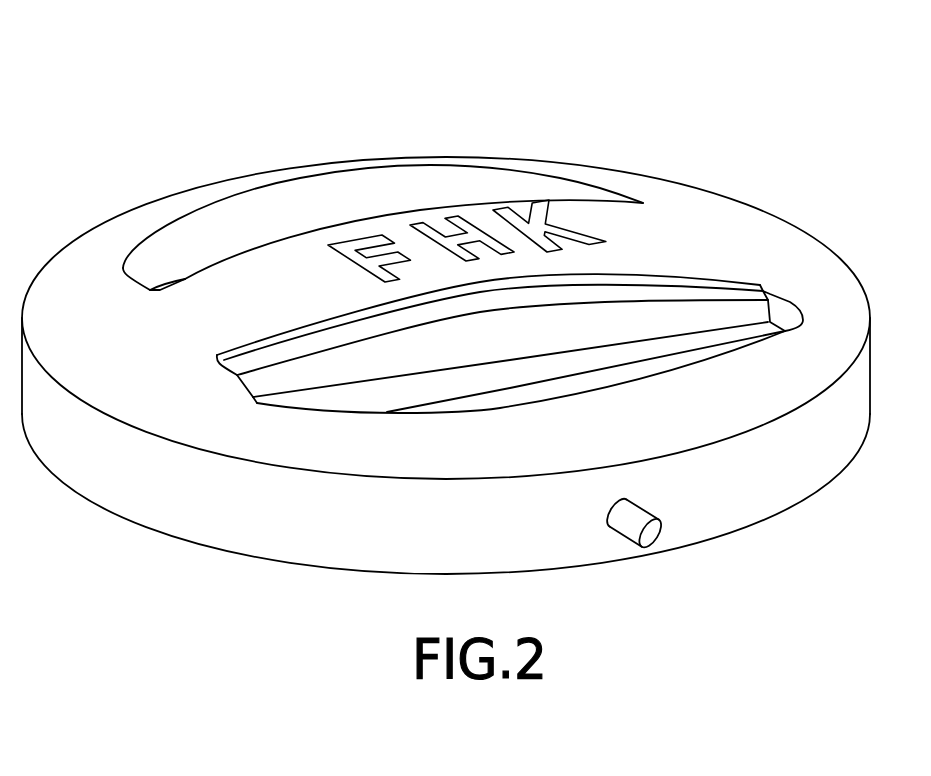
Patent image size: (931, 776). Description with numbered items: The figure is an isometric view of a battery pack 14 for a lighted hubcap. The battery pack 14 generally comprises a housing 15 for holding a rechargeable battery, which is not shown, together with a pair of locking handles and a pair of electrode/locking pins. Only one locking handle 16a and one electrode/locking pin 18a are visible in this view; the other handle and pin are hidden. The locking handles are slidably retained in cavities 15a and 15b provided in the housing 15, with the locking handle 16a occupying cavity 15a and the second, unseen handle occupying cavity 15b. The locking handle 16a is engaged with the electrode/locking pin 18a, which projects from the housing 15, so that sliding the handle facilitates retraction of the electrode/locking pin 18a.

The battery pack 14 is at (366, 84).
The housing 15 is at (733, 228).
The cavity 15a is at (783, 313).
The cavity 15b is at (503, 187).
The locking handle 16a is at (340, 355).
The electrode/locking pin 18a is at (623, 523).